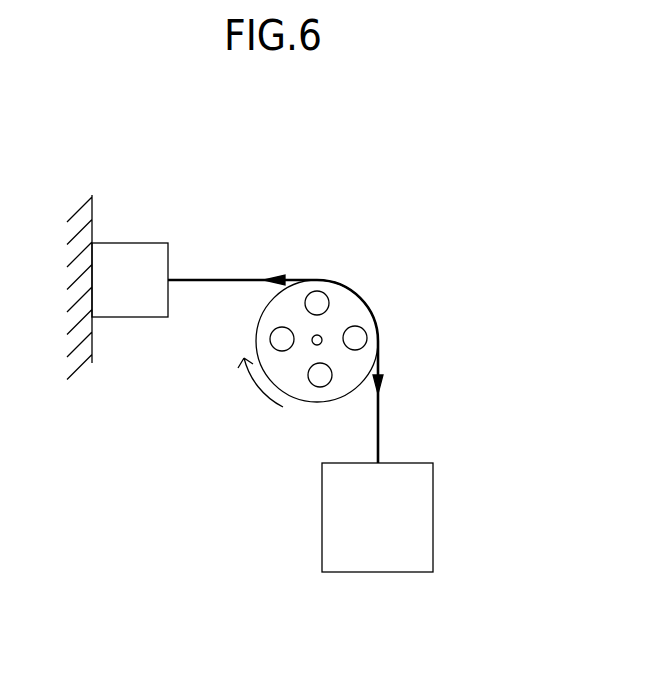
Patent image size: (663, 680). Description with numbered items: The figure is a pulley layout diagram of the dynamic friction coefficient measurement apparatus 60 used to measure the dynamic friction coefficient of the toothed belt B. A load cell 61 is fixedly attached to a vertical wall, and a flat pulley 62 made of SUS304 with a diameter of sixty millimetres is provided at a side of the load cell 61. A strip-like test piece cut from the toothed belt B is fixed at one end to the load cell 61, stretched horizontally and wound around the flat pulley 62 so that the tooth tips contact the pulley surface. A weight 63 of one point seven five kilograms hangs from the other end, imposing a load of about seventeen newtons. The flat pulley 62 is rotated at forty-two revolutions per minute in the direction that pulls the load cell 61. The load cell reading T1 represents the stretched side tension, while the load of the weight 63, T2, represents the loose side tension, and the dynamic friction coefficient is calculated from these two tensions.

The dynamic friction coefficient measurement apparatus 60 is at (460, 258).
The load cell 61 is at (137, 243).
The flat pulley 62 is at (257, 330).
The weight 63 is at (433, 512).
The toothed belt B is at (205, 280).
The stretched side tension T1 is at (290, 256).
The loose side tension T2 is at (403, 370).